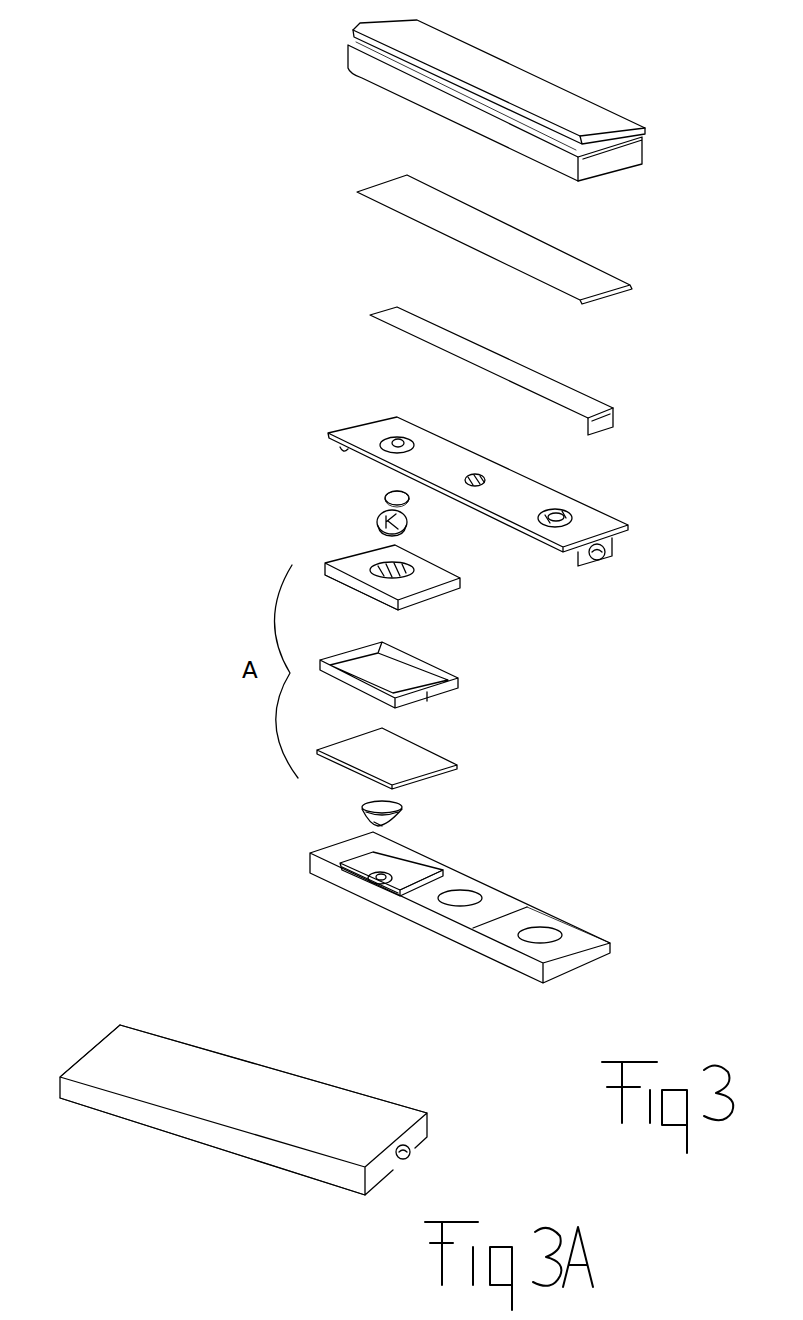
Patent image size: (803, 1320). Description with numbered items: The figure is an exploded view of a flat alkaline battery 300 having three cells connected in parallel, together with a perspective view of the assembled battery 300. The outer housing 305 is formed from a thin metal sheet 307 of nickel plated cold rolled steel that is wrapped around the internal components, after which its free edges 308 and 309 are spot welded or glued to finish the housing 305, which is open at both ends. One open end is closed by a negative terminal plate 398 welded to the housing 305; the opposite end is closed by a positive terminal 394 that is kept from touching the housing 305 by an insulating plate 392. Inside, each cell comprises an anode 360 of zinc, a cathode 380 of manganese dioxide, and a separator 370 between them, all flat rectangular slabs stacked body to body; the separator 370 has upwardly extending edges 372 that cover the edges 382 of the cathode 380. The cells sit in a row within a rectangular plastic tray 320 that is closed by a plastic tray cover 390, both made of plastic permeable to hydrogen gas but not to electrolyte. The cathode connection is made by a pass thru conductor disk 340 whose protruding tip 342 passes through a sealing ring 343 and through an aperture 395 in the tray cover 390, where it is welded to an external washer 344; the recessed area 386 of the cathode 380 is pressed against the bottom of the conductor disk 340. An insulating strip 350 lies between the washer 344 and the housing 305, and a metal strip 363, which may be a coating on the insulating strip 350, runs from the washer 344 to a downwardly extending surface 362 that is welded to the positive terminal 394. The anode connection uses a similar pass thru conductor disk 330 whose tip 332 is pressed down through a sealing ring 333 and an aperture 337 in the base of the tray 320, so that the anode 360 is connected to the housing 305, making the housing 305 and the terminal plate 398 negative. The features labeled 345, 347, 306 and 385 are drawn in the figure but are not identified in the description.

In FIG. 3A, the battery 300 is at (167, 1001).
In FIG. 3, the outer housing 305 is at (597, 110).
In FIG. 3A, the outer housing 305 is at (233, 1073).
In FIG. 3, the housing end wall 306 is at (620, 157).
In FIG. 3, the thin metal sheet 307 is at (437, 53).
In FIG. 3A, the thin metal sheet 307 is at (313, 1095).
In FIG. 3, the free edge 308 is at (395, 68).
In FIG. 3, the free edge 309 is at (352, 32).
In FIG. 3, the plastic tray 320 is at (610, 953).
In FIG. 3, the pass thru conductor disk 330 is at (402, 807).
In FIG. 3, the protruding tip 332 is at (372, 822).
In FIG. 3, the sealing ring 333 is at (373, 875).
In FIG. 3, the aperture 337 is at (355, 885).
In FIG. 3, the pass thru conductor disk 340 is at (410, 530).
In FIG. 3, the protruding tip 342 is at (408, 520).
In FIG. 3, the sealing ring 343 is at (385, 495).
In FIG. 3, the external washer 344 is at (468, 477).
In FIG. 3, the inner hole 345 is at (403, 442).
In FIG. 3, the plate opening 347 is at (385, 435).
In FIG. 3, the insulating strip 350 is at (602, 270).
In FIG. 3, the anode 360 is at (442, 753).
In FIG. 3, the downwardly extending surface 362 is at (613, 420).
In FIG. 3, the metal strip 363 is at (573, 390).
In FIG. 3, the separator 370 is at (443, 663).
In FIG. 3, the upwardly extending edges 372 is at (423, 693).
In FIG. 3, the cathode 380 is at (455, 597).
In FIG. 3, the edges 382 is at (338, 575).
In FIG. 3, the base end section 385 is at (578, 938).
In FIG. 3, the recessed area 386 is at (380, 567).
In FIG. 3, the plastic tray cover 390 is at (558, 492).
In FIG. 3, the insulating plate 392 is at (615, 547).
In FIG. 3, the positive terminal 394 is at (602, 560).
In FIG. 3A, the positive terminal 394 is at (420, 1158).
In FIG. 3, the aperture 395 is at (490, 463).
In FIG. 3A, the negative terminal plate 398 is at (92, 1047).